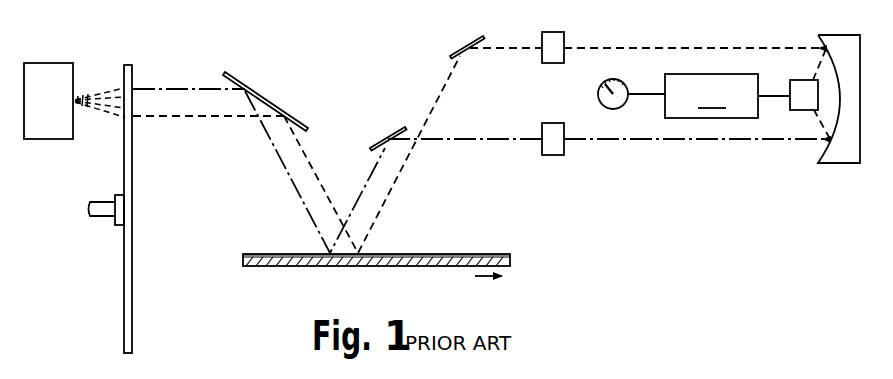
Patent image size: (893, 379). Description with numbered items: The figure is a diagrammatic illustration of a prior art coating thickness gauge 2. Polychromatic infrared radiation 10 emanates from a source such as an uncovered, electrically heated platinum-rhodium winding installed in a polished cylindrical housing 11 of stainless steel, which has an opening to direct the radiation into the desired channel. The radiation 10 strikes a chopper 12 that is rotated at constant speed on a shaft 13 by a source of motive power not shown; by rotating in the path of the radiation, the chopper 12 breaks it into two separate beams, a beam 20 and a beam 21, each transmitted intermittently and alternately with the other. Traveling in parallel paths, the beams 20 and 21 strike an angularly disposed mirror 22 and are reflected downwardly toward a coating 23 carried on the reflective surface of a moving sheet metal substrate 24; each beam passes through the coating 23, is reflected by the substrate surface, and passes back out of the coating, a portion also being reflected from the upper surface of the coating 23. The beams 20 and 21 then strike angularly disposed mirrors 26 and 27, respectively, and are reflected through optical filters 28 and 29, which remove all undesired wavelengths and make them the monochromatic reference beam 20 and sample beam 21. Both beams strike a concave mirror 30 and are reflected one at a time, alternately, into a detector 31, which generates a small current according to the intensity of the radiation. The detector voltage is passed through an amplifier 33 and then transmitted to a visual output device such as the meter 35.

The coating thickness gauge 2 is at (316, 38).
The polychromatic infrared radiation 10 is at (118, 92).
The cylindrical housing 11 is at (48, 62).
The chopper 12 is at (140, 171).
The shaft 13 is at (103, 216).
The reference beam 20 is at (165, 88).
The sample beam 21 is at (214, 117).
The angularly disposed mirror 22 is at (267, 97).
The coating 23 is at (455, 253).
The sheet metal substrate 24 is at (425, 267).
The angularly disposed mirror 26 is at (391, 132).
The angularly disposed mirror 27 is at (461, 47).
The optical filter 28 is at (556, 32).
The optical filter 29 is at (555, 155).
The concave mirror 30 is at (819, 34).
The detector 31 is at (803, 111).
The amplifier 33 is at (709, 96).
The meter 35 is at (600, 88).